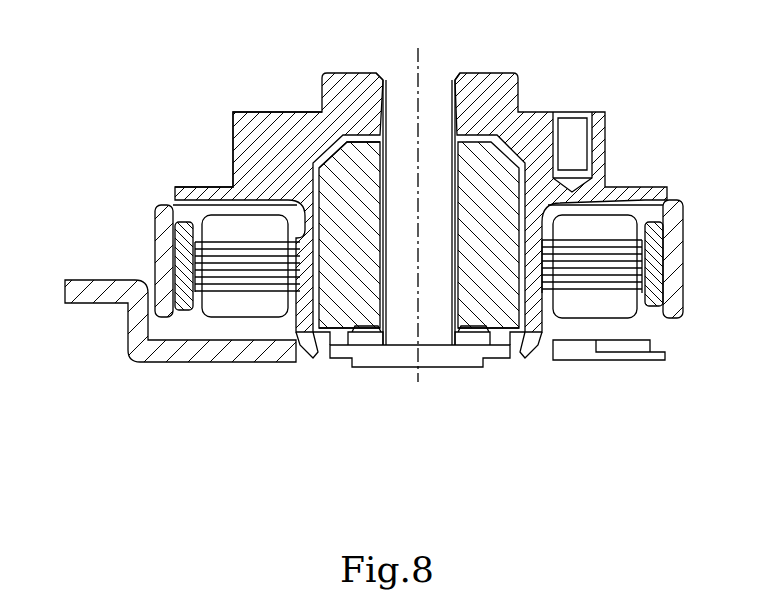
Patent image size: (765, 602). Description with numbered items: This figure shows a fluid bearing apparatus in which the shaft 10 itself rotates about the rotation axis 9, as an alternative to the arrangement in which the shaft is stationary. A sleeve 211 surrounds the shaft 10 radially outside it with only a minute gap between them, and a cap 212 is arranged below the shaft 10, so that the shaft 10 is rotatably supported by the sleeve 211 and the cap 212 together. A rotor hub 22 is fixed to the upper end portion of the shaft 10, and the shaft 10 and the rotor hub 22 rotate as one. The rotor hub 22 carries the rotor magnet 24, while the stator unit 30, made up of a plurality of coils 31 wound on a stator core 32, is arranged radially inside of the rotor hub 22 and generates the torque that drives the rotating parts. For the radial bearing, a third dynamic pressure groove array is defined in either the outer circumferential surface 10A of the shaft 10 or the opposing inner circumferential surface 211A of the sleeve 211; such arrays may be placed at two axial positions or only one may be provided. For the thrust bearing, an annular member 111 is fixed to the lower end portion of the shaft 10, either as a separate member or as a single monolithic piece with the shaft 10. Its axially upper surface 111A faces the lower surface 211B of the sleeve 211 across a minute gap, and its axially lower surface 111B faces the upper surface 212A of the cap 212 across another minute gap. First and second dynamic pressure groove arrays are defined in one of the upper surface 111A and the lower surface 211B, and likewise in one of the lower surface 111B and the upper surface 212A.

The rotation axis 9 is at (421, 50).
The shaft 10 is at (421, 194).
The outer circumferential surface 10A is at (387, 173).
The rotor hub 22 is at (231, 112).
The sleeve 211 is at (262, 118).
The inner circumferential surface 211A is at (325, 168).
The lower surface 211B is at (335, 348).
The cap 212 is at (483, 356).
The upper surface 212A is at (480, 367).
The rotor magnet 24 is at (157, 218).
The stator unit 30 is at (207, 328).
The coils 31 is at (220, 257).
The stator core 32 is at (178, 210).
The annular member 111 is at (473, 350).
The axially upper surface 111A is at (367, 345).
The axially lower surface 111B is at (468, 348).